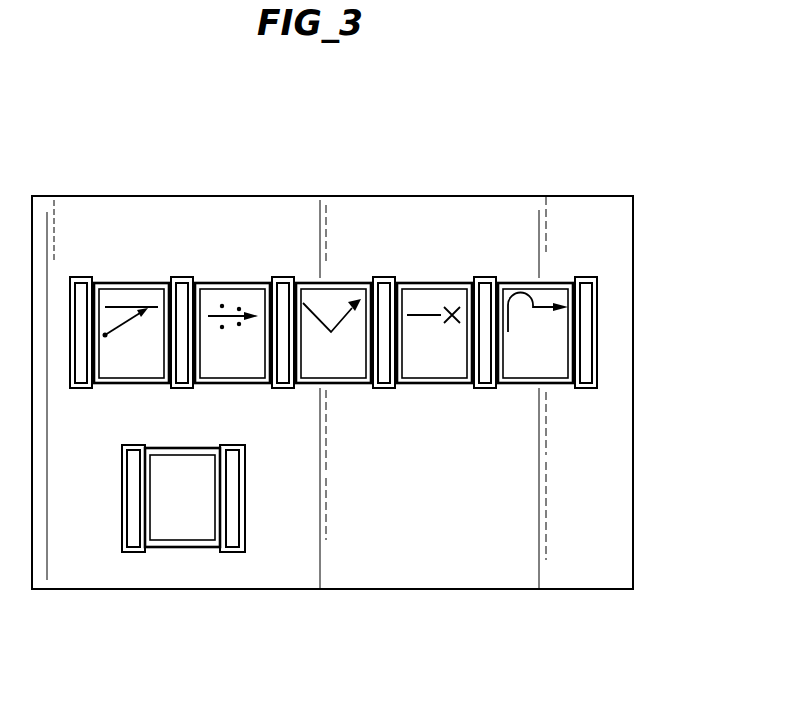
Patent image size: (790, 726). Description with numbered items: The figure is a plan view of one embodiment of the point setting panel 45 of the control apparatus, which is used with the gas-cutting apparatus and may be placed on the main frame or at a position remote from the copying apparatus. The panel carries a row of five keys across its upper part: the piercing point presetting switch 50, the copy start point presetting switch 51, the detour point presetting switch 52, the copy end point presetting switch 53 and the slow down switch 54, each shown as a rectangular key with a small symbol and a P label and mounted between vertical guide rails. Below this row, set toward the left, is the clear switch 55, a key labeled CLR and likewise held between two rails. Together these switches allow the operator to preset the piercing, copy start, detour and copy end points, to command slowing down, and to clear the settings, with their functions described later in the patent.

The point setting panel 45 is at (361, 394).
The piercing point presetting switch 50 is at (126, 296).
The copy start point presetting switch 51 is at (218, 296).
The detour point presetting switch 52 is at (332, 296).
The copy end point presetting switch 53 is at (425, 296).
The slow down switch 54 is at (563, 330).
The clear switch 55 is at (203, 527).